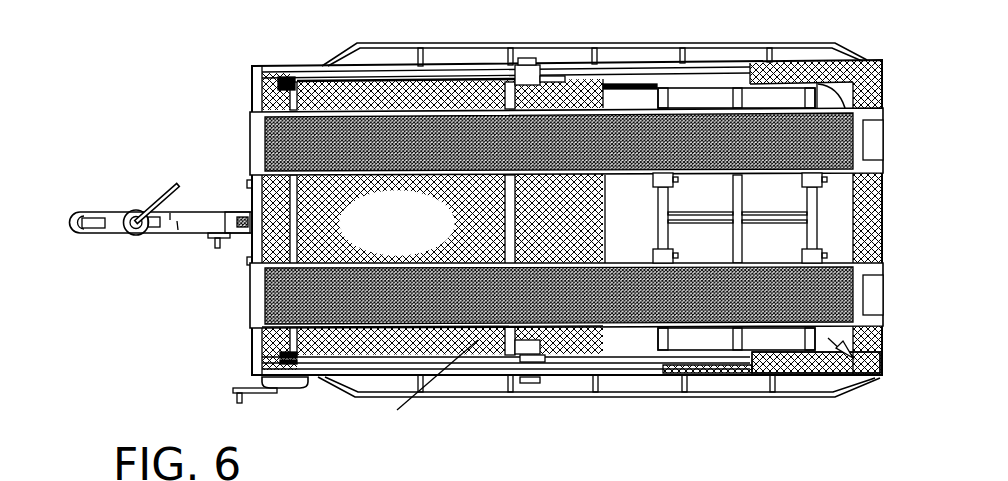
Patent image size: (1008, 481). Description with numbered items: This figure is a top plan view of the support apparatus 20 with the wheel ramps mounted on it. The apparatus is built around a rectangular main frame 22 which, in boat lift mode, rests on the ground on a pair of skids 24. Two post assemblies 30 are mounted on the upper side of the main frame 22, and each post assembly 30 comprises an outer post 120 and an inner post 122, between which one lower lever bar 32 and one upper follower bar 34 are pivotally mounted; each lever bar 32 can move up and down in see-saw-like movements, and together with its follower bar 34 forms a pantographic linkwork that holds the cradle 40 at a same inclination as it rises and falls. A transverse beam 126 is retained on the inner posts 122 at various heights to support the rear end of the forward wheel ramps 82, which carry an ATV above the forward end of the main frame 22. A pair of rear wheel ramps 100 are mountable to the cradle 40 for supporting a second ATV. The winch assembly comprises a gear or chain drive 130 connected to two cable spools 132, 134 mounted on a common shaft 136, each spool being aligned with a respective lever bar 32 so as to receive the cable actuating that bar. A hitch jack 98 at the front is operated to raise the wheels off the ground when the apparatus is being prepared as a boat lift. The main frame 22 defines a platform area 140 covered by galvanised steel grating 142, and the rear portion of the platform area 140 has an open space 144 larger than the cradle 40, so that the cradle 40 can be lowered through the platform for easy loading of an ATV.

The support apparatus 20 is at (147, 320).
The main frame 22 is at (798, 378).
The skids 24 is at (445, 46).
The post assemblies 30 is at (500, 430).
The lever bar 32 is at (363, 80).
The follower bar 34 is at (730, 80).
The cradle 40 is at (837, 100).
The forward wheel ramps 82 is at (250, 137).
The hitch jack 98 is at (152, 235).
The rear wheel ramps 100 is at (867, 60).
The outer post 120 is at (528, 68).
The inner post 122 is at (533, 80).
The transverse beam 126 is at (432, 386).
The gear or chain drive 130 is at (291, 388).
The cable spool 132 is at (262, 360).
The cable spool 134 is at (262, 80).
The common shaft 136 is at (262, 100).
The platform area 140 is at (816, 362).
The galvanised steel grating 142 is at (397, 223).
The open space 144 is at (857, 375).